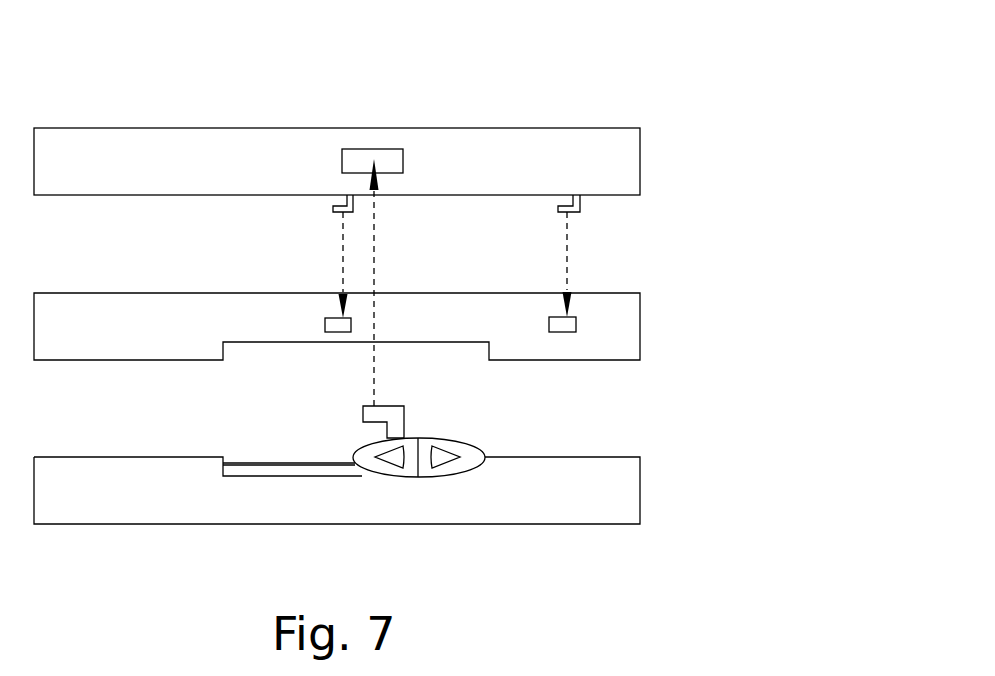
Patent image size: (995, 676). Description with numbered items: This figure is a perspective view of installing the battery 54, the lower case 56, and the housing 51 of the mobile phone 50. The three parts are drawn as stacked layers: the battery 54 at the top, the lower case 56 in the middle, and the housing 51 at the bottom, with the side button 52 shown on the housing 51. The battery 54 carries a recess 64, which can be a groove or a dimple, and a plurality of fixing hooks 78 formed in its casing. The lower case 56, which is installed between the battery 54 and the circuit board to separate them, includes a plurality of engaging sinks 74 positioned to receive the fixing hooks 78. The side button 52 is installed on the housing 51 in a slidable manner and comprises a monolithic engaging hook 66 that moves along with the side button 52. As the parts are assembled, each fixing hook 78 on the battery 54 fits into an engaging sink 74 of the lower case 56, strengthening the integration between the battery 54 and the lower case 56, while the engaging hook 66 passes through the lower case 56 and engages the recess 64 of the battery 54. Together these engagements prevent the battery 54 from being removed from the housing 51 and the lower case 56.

The mobile phone 50 is at (770, 105).
The housing 51 is at (621, 501).
The side button 52 is at (486, 437).
The battery 54 is at (182, 143).
The lower case 56 is at (631, 326).
The recess 64 is at (392, 149).
The engaging hook 66 is at (361, 414).
The engaging sink 74 is at (323, 322).
The fixing hook 78 is at (333, 209).